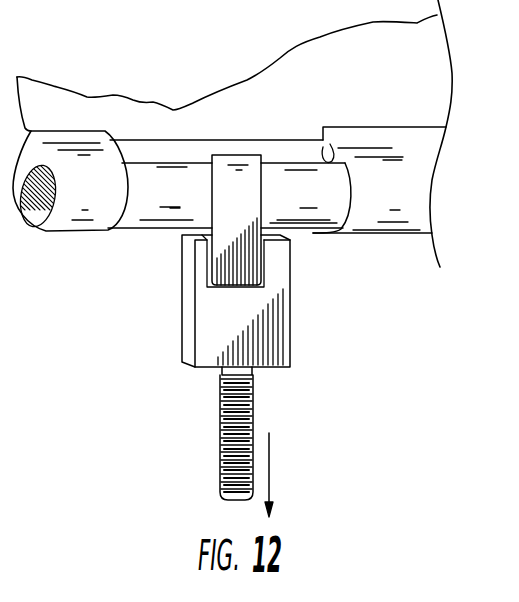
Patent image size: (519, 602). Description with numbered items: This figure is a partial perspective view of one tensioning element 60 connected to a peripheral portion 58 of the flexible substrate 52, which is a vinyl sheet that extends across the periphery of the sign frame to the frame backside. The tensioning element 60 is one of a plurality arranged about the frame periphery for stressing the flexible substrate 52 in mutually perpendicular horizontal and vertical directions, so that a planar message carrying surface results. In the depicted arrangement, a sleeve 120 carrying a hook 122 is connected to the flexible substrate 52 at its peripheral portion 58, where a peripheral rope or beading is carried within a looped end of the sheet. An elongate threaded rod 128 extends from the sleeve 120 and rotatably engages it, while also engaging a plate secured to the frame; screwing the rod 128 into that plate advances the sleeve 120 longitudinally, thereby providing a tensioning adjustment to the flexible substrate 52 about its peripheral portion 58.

The flexible substrate 52 is at (383, 75).
The peripheral portion 58 is at (101, 212).
The tensioning element 60 is at (244, 336).
The sleeve 120 is at (210, 335).
The hook 122 is at (225, 208).
The elongate threaded rod 128 is at (253, 404).